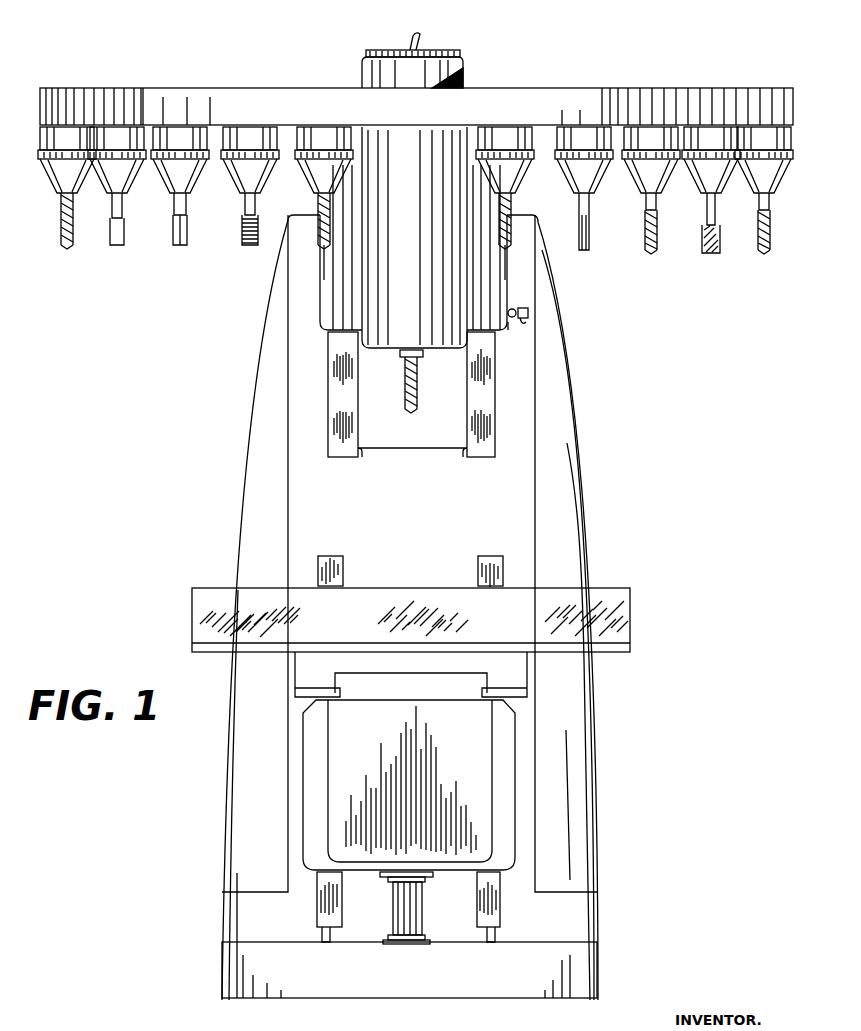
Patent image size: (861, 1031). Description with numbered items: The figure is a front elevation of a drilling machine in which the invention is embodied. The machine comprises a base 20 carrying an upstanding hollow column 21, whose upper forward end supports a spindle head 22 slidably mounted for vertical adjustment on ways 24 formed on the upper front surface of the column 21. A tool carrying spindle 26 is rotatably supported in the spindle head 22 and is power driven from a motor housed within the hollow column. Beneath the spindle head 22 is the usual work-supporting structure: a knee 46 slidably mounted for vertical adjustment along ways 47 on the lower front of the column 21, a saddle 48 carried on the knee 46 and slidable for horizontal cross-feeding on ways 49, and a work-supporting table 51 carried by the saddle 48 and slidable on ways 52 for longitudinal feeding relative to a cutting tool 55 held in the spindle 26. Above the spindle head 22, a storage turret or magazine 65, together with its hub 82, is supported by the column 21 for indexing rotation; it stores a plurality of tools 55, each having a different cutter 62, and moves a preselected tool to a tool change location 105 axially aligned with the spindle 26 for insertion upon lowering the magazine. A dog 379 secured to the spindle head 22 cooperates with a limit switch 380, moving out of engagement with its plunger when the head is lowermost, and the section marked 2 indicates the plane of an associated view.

The section line 2- 2 is at (432, 12).
The base 20 is at (550, 967).
The hollow column 21 is at (530, 550).
The spindle head 22 is at (328, 324).
The ways 24 is at (342, 453).
The tool carrying spindle 26 is at (424, 356).
The knee 46 is at (478, 857).
The ways 47 is at (316, 917).
The saddle 48 is at (512, 689).
The ways 49 is at (474, 673).
The work-supporting table 51 is at (623, 600).
The ways 52 is at (618, 653).
The tool 55 is at (195, 212).
The cutter 62 is at (67, 243).
The storage turret or magazine 65 is at (330, 79).
The hub 82 is at (460, 68).
The tool change location 105 is at (413, 421).
The dog 379 is at (508, 322).
The limit switch 380 is at (528, 313).